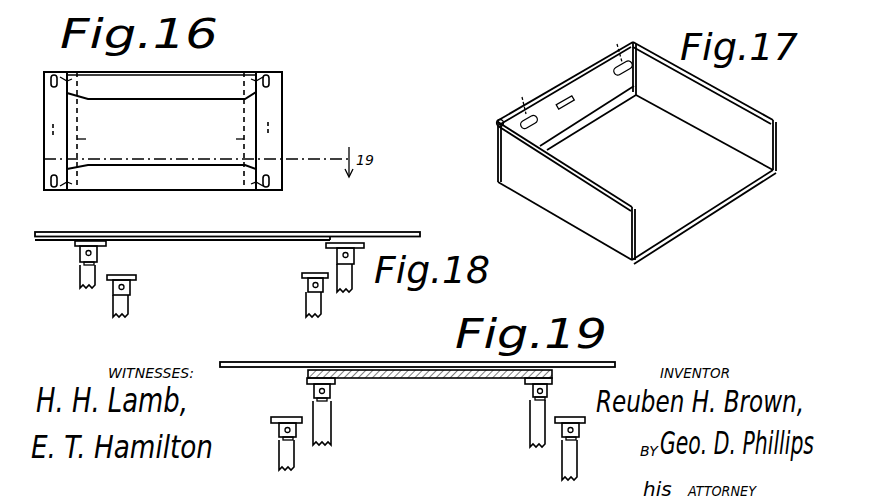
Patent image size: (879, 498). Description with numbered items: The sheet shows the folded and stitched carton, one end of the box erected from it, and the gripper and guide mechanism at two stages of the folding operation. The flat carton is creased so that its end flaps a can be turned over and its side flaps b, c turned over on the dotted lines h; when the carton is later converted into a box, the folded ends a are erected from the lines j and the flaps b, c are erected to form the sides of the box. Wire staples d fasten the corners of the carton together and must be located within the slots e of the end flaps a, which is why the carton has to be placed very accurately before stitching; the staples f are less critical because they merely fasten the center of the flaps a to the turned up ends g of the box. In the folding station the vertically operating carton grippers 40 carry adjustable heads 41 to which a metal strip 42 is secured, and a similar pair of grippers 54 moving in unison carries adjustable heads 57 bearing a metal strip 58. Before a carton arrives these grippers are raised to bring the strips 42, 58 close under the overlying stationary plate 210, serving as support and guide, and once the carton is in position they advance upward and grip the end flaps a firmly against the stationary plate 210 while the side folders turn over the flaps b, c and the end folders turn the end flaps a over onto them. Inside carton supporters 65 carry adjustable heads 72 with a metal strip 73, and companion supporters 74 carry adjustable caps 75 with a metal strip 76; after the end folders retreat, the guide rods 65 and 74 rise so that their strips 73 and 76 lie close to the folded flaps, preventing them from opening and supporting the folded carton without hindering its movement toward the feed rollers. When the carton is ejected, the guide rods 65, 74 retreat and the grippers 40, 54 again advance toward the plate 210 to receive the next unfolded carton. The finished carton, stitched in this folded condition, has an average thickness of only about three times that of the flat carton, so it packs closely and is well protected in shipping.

In FIG. 16, the end flaps a is at (55, 108).
In FIG. 17, the end flaps a is at (548, 103).
In FIG. 18, the end flaps a is at (73, 242).
In FIG. 19, the end flaps a is at (338, 378).
In FIG. 16, the side flap b is at (181, 181).
In FIG. 17, the side flap b is at (566, 190).
In FIG. 18, the side flap b is at (186, 242).
In FIG. 16, the side flap c is at (177, 83).
In FIG. 17, the side flap c is at (704, 106).
In FIG. 16, the wire staples d is at (54, 75).
In FIG. 17, the wire staples d is at (567, 65).
In FIG. 16, the slots e is at (66, 79).
In FIG. 17, the slots e is at (541, 130).
In FIG. 16, the staples f is at (53, 137).
In FIG. 17, the staples f is at (577, 100).
In FIG. 16, the turned up ends g is at (86, 139).
In FIG. 17, the turned up ends g is at (582, 122).
In FIG. 17, the crease lines h is at (703, 134).
In FIG. 16, the crease lines j is at (77, 113).
In FIG. 17, the crease lines j is at (609, 117).
In FIG. 18, the stationary plate 210 is at (399, 233).
In FIG. 19, the stationary plate 210 is at (417, 356).
In FIG. 18, the metal strip 58 is at (82, 254).
In FIG. 19, the metal strip 58 is at (276, 423).
In FIG. 18, the adjustable heads 57 is at (82, 267).
In FIG. 19, the adjustable heads 57 is at (298, 434).
In FIG. 18, the carton gripper 54 is at (85, 284).
In FIG. 19, the carton gripper 54 is at (297, 466).
In FIG. 18, the metal strip 76 is at (136, 278).
In FIG. 19, the metal strip 76 is at (307, 382).
In FIG. 18, the adjustable caps 75 is at (130, 290).
In FIG. 19, the adjustable caps 75 is at (314, 393).
In FIG. 18, the carton supporter 74 is at (126, 315).
In FIG. 19, the carton supporter 74 is at (334, 420).
In FIG. 18, the metal strip 42 is at (330, 247).
In FIG. 19, the metal strip 42 is at (572, 417).
In FIG. 18, the adjustable heads 41 is at (358, 264).
In FIG. 19, the adjustable heads 41 is at (580, 431).
In FIG. 18, the carton grippers 40 is at (351, 292).
In FIG. 19, the carton grippers 40 is at (562, 471).
In FIG. 18, the metal strip 73 is at (300, 275).
In FIG. 19, the metal strip 73 is at (528, 387).
In FIG. 18, the adjustable heads 72 is at (307, 285).
In FIG. 19, the adjustable heads 72 is at (531, 397).
In FIG. 18, the carton supporting guide rod 65 is at (306, 312).
In FIG. 19, the carton supporting guide rod 65 is at (528, 431).